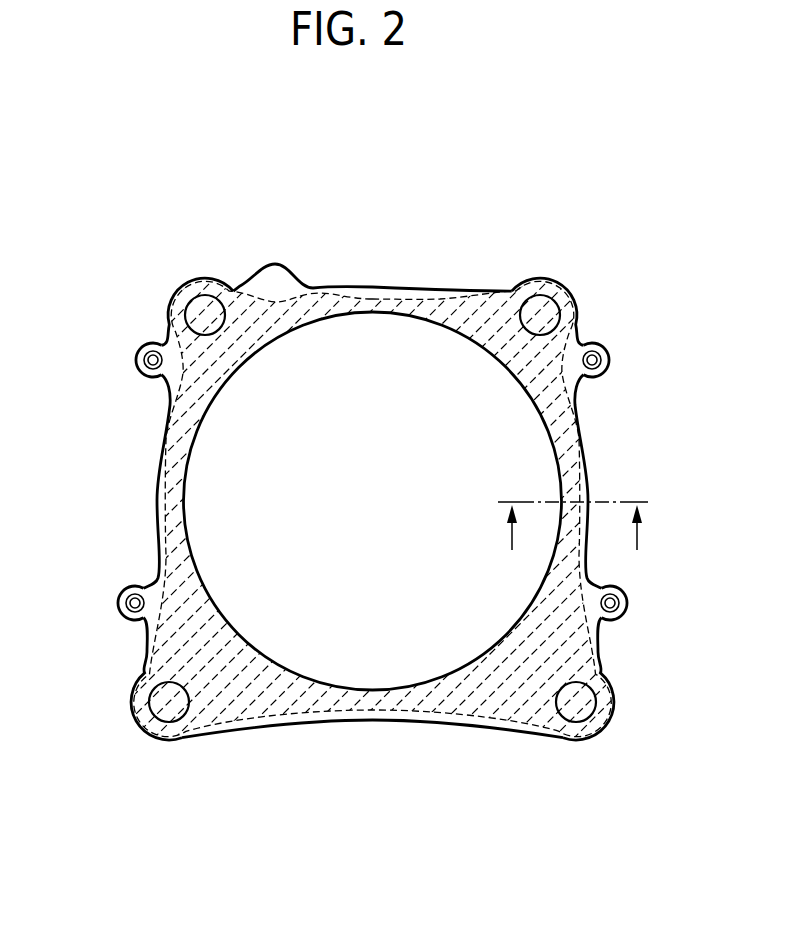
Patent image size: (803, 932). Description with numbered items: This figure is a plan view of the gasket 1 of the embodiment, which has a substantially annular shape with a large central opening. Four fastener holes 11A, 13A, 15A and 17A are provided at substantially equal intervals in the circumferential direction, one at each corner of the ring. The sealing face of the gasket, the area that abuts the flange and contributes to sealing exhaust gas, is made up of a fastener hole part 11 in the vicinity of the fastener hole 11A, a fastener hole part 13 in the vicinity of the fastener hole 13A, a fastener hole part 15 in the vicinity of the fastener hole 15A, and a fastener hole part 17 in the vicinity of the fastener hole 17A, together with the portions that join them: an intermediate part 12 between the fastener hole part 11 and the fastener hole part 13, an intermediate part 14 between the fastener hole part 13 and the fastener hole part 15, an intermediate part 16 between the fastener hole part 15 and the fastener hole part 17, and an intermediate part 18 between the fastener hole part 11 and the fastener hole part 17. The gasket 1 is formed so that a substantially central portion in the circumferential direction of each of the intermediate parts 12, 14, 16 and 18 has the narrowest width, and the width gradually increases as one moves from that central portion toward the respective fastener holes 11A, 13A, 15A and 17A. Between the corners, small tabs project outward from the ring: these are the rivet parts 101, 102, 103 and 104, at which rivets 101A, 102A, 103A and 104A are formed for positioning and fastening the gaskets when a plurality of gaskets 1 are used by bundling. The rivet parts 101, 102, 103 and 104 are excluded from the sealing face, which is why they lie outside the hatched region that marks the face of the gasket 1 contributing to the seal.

The gasket 1 is at (553, 180).
The fastener hole part 11 is at (530, 350).
The fastener hole 11A is at (555, 302).
The intermediate part 12 is at (582, 494).
The fastener hole part 13 is at (535, 663).
The fastener hole 13A is at (590, 713).
The intermediate part 14 is at (370, 703).
The fastener hole part 15 is at (207, 667).
The fastener hole 15A is at (153, 708).
The intermediate part 16 is at (163, 498).
The fastener hole part 17 is at (217, 350).
The fastener hole 17A is at (194, 303).
The intermediate part 18 is at (394, 294).
The rivet part 101 is at (580, 383).
The rivet 101A is at (601, 358).
The rivet part 102 is at (590, 592).
The rivet 102A is at (619, 603).
The rivet part 103 is at (155, 590).
The rivet 103A is at (126, 603).
The rivet part 104 is at (167, 385).
The rivet 104A is at (144, 358).